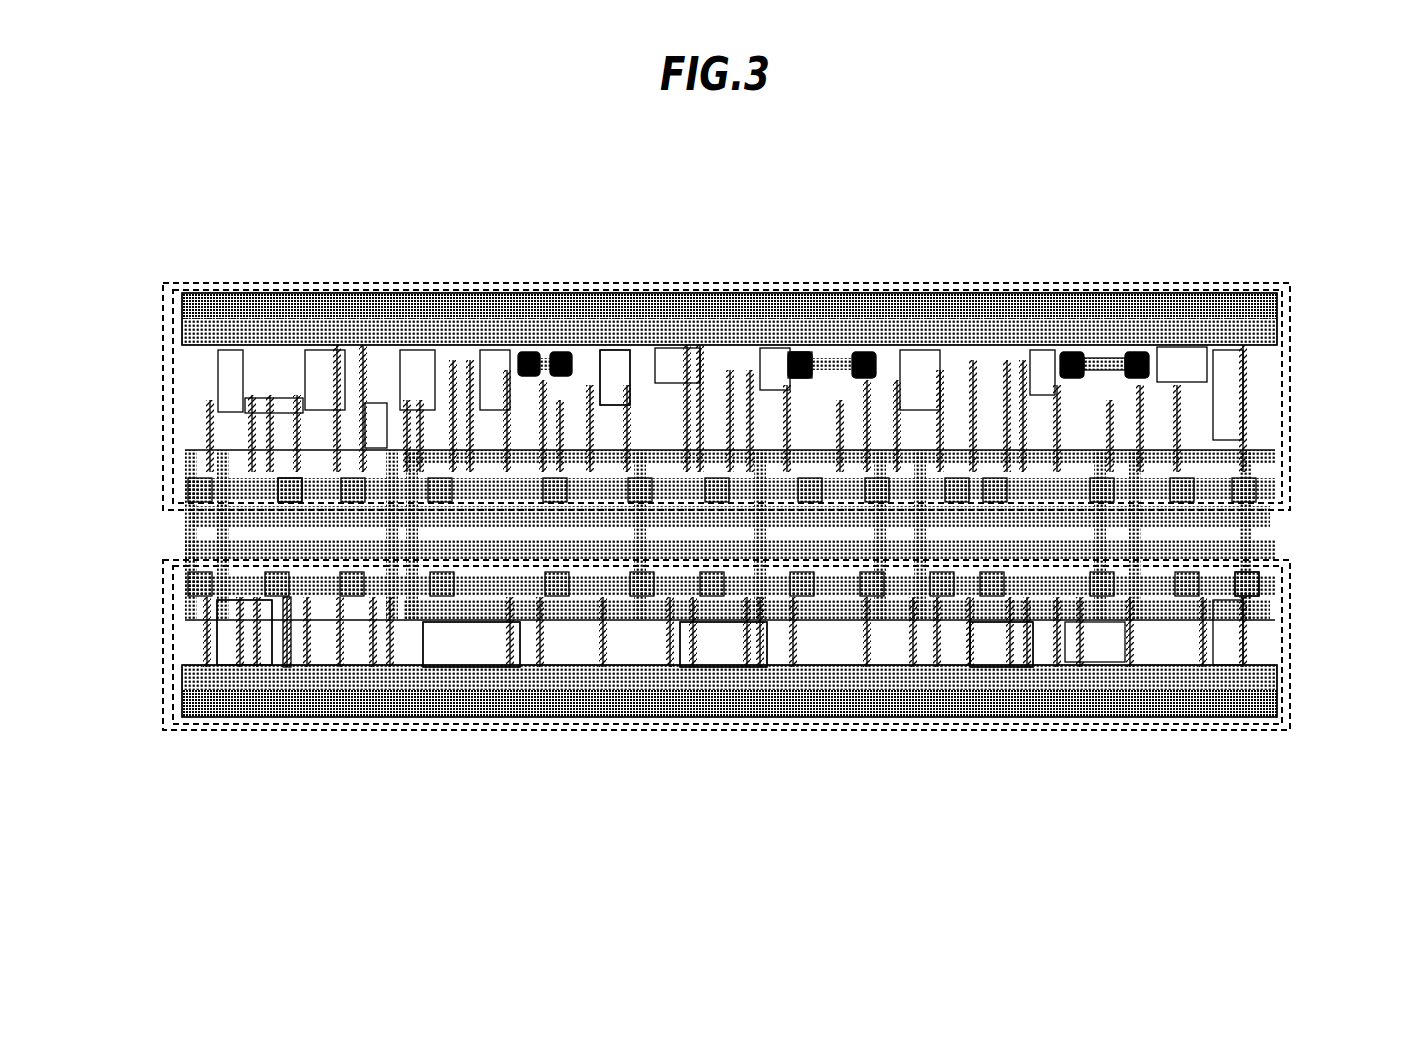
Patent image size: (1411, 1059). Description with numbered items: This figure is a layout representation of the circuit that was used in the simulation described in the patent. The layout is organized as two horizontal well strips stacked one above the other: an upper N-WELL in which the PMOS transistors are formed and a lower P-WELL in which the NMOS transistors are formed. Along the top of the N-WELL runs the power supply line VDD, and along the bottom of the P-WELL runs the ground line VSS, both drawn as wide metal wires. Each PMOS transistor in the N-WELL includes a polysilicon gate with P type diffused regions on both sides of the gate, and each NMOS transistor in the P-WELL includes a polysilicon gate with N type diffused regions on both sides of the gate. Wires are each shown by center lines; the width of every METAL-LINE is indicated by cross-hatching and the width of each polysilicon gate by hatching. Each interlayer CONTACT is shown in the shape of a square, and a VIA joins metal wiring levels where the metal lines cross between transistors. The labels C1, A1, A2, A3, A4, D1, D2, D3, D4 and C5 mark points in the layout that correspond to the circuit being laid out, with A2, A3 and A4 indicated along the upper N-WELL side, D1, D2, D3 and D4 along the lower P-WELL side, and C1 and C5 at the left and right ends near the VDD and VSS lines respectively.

The contact C1 is at (327, 478).
The node A1 is at (290, 718).
The node A2 is at (592, 380).
The node A3 is at (795, 400).
The node A4 is at (1107, 395).
The node D1 is at (237, 718).
The node D2 is at (470, 718).
The node D3 is at (773, 718).
The node D4 is at (1013, 718).
The contact C5 is at (1243, 718).
The VDD power supply line VDD is at (1273, 282).
The VSS ground line VSS is at (1278, 730).
The N well N-WELL is at (170, 283).
The P well P-WELL is at (165, 733).
The interlayer contact CONTACT is at (357, 457).
The via VIA is at (531, 362).
The metal wire METAL-LINE is at (537, 718).